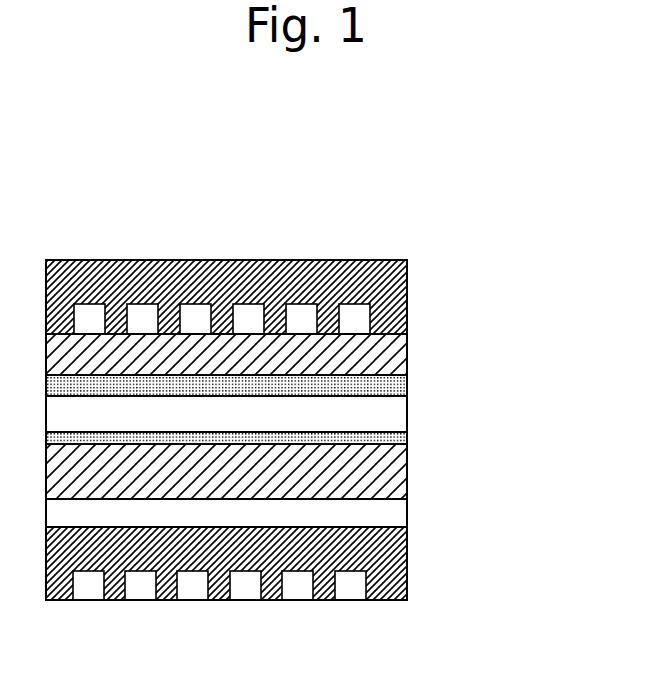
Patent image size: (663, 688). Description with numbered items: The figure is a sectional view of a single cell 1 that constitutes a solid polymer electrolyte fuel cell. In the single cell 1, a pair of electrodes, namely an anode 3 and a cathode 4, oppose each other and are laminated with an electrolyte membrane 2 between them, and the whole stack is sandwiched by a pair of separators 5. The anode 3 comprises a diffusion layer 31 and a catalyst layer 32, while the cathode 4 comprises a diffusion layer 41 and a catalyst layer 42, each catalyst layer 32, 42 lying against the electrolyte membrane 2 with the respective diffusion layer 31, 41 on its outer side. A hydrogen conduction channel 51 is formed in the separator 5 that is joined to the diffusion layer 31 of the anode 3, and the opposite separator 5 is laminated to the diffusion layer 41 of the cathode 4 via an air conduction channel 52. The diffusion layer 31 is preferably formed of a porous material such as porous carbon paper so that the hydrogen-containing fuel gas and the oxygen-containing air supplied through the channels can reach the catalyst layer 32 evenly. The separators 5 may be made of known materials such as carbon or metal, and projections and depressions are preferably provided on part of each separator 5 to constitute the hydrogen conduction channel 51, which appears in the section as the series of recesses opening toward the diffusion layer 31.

The single cell 1 is at (302, 374).
The electrolyte membrane 2 is at (392, 415).
The anode 3 is at (302, 368).
The diffusion layer 31 is at (407, 352).
The catalyst layer 32 is at (275, 387).
The cathode 4 is at (302, 466).
The diffusion layer 41 is at (398, 477).
The catalyst layer 42 is at (407, 437).
The separator 5 is at (274, 297).
The hydrogen conduction channel 51 is at (362, 318).
The air conduction channel 52 is at (392, 513).